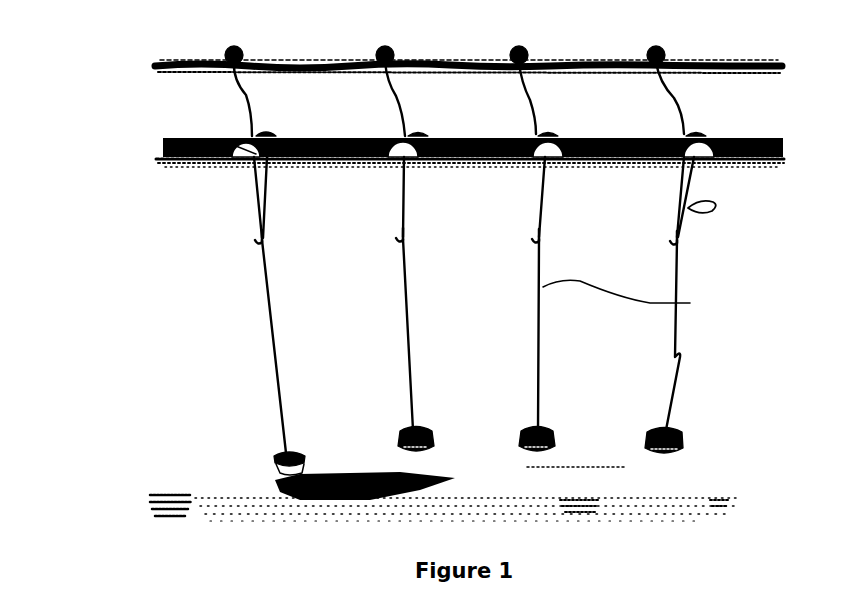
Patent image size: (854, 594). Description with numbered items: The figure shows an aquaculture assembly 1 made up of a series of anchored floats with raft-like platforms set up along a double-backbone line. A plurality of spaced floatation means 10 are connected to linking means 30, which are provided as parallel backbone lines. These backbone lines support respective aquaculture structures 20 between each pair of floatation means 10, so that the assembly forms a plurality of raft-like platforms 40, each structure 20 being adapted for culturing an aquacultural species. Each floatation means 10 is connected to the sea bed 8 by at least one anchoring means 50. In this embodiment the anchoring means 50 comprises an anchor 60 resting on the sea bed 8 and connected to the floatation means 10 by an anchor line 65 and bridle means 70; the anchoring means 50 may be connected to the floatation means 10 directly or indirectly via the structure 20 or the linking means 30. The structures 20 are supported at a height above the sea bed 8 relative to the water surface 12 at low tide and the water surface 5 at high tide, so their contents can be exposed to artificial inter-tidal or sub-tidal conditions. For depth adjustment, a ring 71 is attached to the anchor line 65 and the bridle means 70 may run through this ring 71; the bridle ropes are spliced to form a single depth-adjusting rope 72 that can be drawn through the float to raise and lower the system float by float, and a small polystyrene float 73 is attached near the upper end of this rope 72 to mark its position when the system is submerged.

The aquaculture assembly 1 is at (117, 153).
The water surface at high tide 5 is at (768, 83).
The sea bed 8 is at (242, 493).
The floatation means 10 is at (523, 130).
The water surface at low tide 12 is at (773, 165).
The aquaculture structure 20 is at (333, 135).
The linking means 30 is at (768, 138).
The raft-like platform 40 is at (699, 130).
The anchoring means 50 is at (742, 183).
The anchor 60 is at (434, 438).
The anchor line 65 is at (676, 358).
The bridle means 70 is at (719, 205).
The ring 71 is at (260, 238).
The depth-adjusting rope 72 is at (240, 98).
The polystyrene float 73 is at (232, 50).